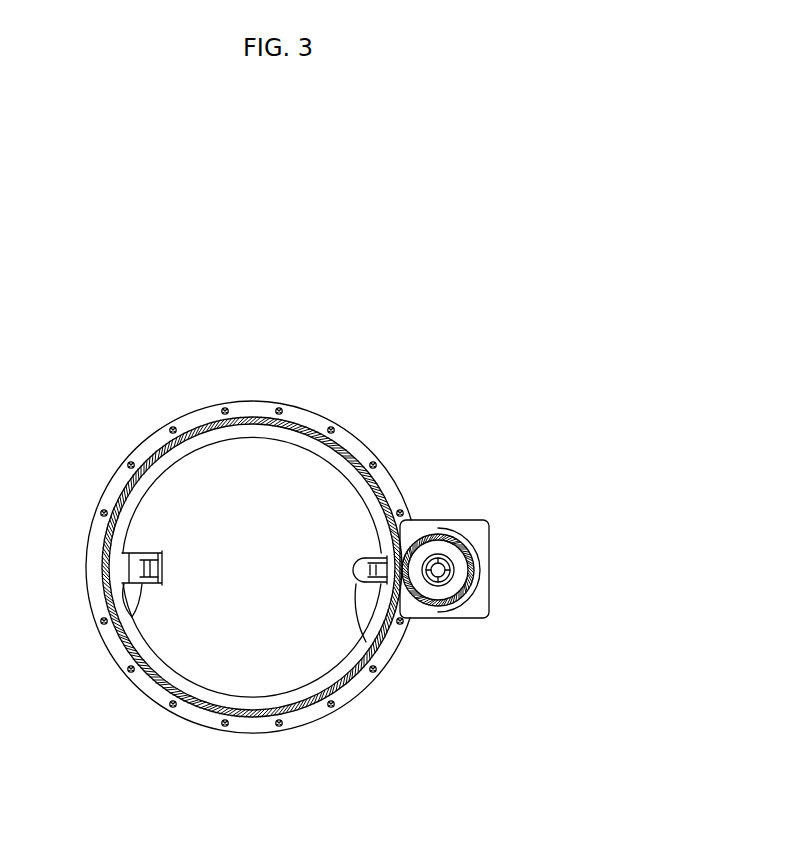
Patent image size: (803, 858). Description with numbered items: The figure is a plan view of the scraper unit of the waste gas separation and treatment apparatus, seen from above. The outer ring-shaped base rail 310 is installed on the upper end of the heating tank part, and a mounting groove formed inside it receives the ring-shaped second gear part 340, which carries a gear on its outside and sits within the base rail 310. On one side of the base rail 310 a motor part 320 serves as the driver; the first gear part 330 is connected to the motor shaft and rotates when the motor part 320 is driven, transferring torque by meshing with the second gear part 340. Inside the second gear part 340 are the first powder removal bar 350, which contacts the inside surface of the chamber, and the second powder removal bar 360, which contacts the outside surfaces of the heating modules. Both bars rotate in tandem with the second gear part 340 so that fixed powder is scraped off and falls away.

The base rail 310 is at (302, 417).
The second gear part 340 is at (347, 456).
The motor part 320 is at (442, 547).
The first gear part 330 is at (438, 604).
The first powder removal bar 350 is at (373, 585).
The second powder removal bar 360 is at (132, 616).